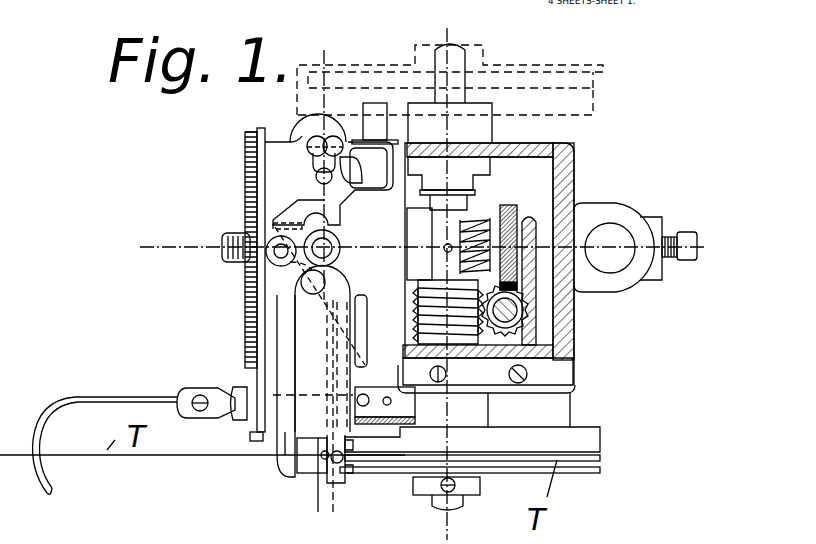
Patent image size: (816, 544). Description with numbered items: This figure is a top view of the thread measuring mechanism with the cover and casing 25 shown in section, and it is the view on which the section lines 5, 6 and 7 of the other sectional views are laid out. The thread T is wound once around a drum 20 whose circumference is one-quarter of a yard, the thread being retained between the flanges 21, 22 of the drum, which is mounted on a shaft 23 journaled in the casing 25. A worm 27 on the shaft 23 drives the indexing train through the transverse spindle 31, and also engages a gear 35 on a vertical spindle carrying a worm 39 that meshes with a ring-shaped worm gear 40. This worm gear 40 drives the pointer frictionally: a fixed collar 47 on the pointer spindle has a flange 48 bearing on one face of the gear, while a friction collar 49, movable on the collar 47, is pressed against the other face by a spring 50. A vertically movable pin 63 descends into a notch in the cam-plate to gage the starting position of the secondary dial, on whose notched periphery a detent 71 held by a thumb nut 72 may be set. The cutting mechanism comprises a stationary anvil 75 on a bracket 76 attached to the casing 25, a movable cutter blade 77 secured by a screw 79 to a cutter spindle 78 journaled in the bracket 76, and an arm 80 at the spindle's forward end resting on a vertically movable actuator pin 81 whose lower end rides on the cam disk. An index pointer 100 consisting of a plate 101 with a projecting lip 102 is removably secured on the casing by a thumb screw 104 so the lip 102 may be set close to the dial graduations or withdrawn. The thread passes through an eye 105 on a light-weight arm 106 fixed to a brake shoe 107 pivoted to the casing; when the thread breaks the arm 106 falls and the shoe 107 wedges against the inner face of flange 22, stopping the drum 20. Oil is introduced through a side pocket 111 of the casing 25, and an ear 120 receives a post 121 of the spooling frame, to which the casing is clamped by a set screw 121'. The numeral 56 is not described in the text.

The section line 5— 5 is at (437, 252).
The section line 6— 6 is at (450, 72).
The section line 7— 7 is at (328, 279).
The drum 20 is at (585, 467).
The flange 21 is at (507, 470).
The flange 22 is at (598, 436).
The shaft 23 is at (460, 58).
The casing 25 is at (577, 177).
The worm 27 is at (418, 318).
The transverse spindle 31 is at (375, 108).
The gear 35 is at (540, 338).
The worm 39 is at (540, 313).
The worm gear 40 is at (513, 207).
The fixed collar 47 is at (440, 231).
The flange 48 is at (556, 197).
The friction collar 49 is at (500, 215).
The spring 50 is at (467, 235).
The bottom plate 56 is at (478, 376).
The pin 63 is at (333, 258).
The detent 71 is at (245, 366).
The thumb nut 72 is at (200, 387).
The stationary plate or anvil 75 is at (277, 465).
The bracket 76 is at (344, 388).
The movable cutter blade 77 is at (313, 460).
The cutter spindle 78 is at (343, 462).
The screw 79 is at (337, 462).
The arm 80 is at (283, 270).
The actuator or pin 81 is at (273, 257).
The index pointer 100 is at (277, 227).
The plate 101 is at (371, 185).
The projecting lip 102 is at (272, 227).
The thumb screw 104 is at (297, 143).
The eye or loop 105 is at (48, 482).
The light-weight arm 106 is at (93, 390).
The brake shoe 107 is at (415, 418).
The side pocket 111 is at (300, 135).
The ear 120 is at (620, 204).
The post 121 is at (610, 248).
The set screw 121' is at (691, 226).